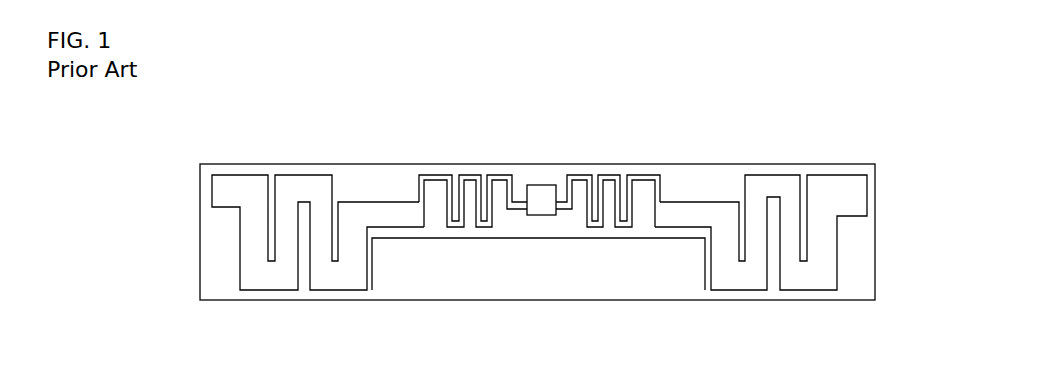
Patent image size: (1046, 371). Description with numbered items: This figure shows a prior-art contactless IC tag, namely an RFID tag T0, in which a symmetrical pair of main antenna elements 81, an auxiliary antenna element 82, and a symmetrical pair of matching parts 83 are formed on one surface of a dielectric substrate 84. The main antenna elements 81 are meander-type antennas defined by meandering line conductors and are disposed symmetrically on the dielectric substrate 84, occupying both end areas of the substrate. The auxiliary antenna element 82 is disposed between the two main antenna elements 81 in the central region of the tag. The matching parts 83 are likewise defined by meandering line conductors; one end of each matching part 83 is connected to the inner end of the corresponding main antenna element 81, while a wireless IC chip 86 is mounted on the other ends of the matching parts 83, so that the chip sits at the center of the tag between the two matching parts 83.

The RFID tag T0 is at (536, 226).
The main antenna elements 81 is at (539, 273).
The auxiliary antenna element 82 is at (592, 282).
The matching parts 83 is at (539, 166).
The dielectric substrate 84 is at (222, 292).
The wireless IC chip 86 is at (546, 169).